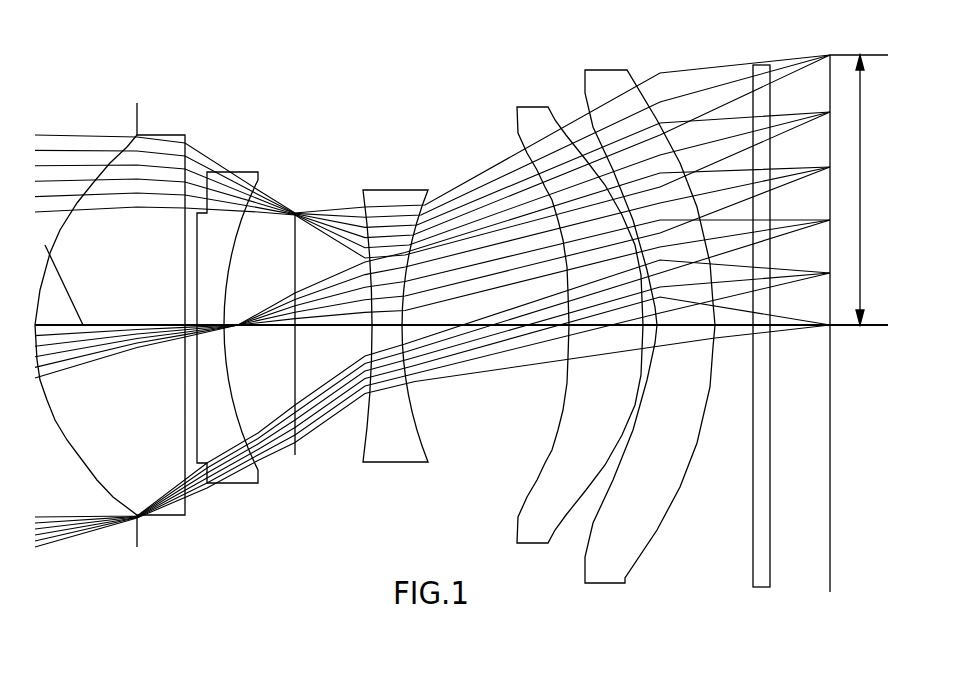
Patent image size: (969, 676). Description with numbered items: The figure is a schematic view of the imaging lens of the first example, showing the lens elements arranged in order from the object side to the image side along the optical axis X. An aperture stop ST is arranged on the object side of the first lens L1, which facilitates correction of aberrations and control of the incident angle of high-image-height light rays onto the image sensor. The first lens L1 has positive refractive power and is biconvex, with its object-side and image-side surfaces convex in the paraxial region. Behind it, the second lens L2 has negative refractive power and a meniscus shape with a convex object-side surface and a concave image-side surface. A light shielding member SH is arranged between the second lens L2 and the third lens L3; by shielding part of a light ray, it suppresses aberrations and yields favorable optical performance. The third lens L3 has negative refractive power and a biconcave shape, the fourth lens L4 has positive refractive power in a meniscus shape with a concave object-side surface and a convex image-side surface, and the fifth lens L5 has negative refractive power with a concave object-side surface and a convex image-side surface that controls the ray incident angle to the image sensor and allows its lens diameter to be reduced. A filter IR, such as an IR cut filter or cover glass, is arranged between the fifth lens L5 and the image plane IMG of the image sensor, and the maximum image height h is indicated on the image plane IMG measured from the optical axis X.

The aperture stop ST is at (135, 130).
The first lens L1 is at (180, 135).
The second lens L2 is at (250, 171).
The third lens L3 is at (393, 190).
The fourth lens L4 is at (529, 107).
The fifth lens L5 is at (589, 70).
The light shielding member SH is at (309, 357).
The filter IR is at (760, 65).
The image plane IMG is at (830, 592).
The optical axis X is at (55, 279).
The maximum image height h is at (859, 190).